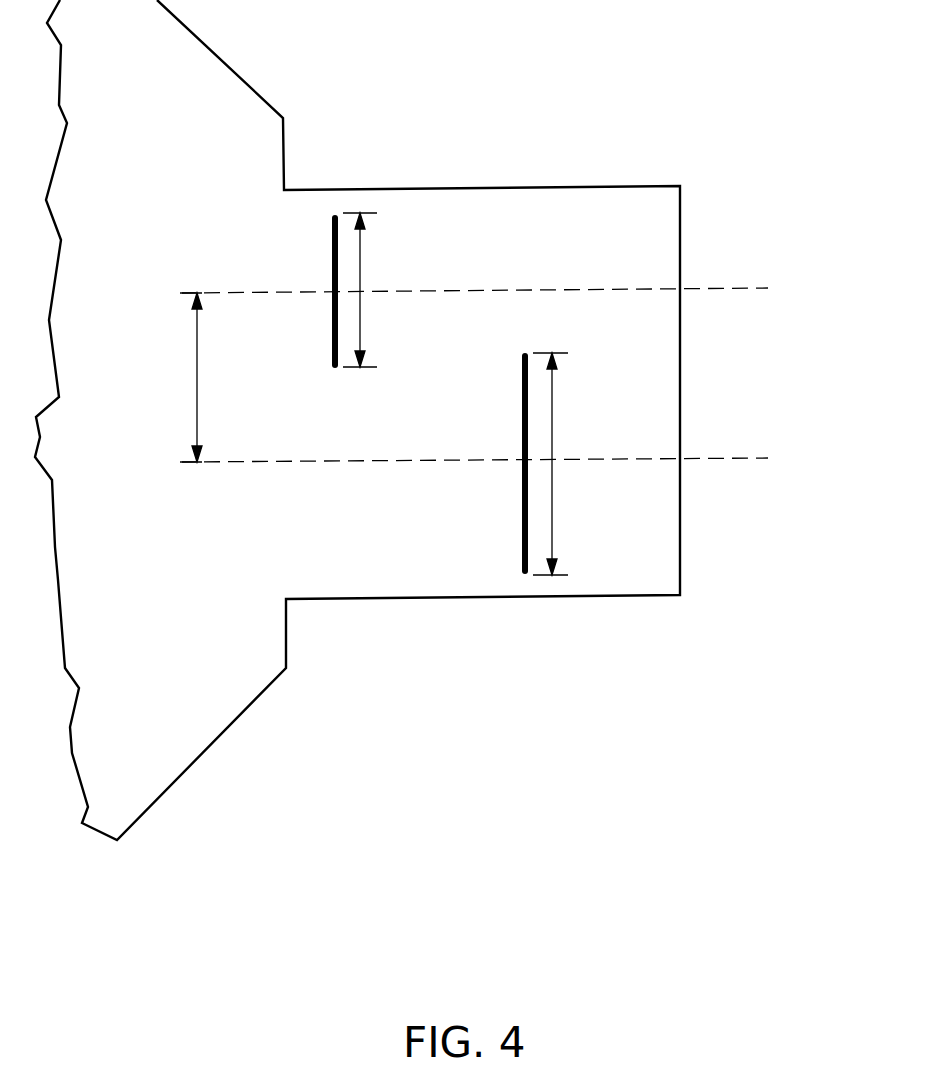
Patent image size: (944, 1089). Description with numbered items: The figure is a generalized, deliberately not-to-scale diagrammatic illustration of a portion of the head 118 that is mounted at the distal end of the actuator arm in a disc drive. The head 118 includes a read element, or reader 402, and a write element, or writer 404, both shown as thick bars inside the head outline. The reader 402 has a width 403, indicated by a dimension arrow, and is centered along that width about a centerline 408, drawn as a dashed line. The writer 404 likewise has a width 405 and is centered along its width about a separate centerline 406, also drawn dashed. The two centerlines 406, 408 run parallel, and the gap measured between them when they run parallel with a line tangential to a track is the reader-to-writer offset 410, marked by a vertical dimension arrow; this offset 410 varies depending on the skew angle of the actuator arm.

The head 118 is at (558, 119).
The read element 402 is at (332, 329).
The width of the reader 403 is at (362, 247).
The write element 404 is at (520, 437).
The width of the writer 405 is at (552, 395).
The centerline of the writer 406 is at (712, 458).
The centerline of the reader 408 is at (712, 288).
The reader-to-writer offset 410 is at (197, 380).